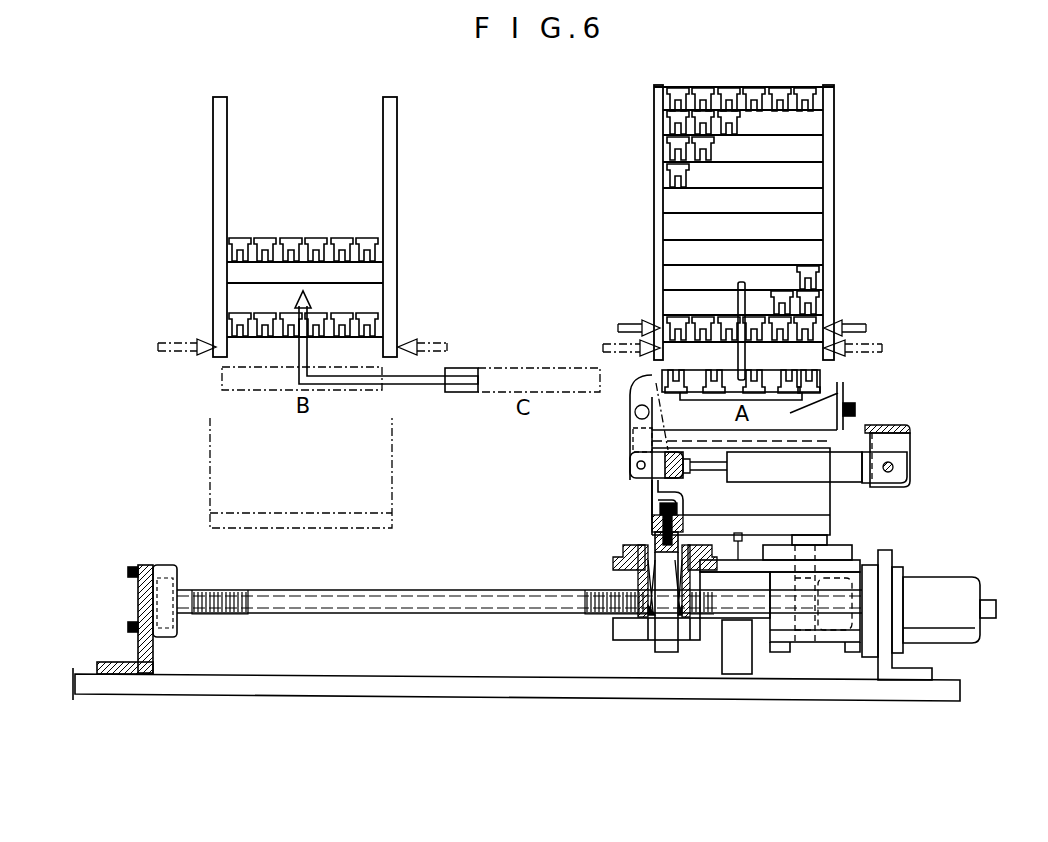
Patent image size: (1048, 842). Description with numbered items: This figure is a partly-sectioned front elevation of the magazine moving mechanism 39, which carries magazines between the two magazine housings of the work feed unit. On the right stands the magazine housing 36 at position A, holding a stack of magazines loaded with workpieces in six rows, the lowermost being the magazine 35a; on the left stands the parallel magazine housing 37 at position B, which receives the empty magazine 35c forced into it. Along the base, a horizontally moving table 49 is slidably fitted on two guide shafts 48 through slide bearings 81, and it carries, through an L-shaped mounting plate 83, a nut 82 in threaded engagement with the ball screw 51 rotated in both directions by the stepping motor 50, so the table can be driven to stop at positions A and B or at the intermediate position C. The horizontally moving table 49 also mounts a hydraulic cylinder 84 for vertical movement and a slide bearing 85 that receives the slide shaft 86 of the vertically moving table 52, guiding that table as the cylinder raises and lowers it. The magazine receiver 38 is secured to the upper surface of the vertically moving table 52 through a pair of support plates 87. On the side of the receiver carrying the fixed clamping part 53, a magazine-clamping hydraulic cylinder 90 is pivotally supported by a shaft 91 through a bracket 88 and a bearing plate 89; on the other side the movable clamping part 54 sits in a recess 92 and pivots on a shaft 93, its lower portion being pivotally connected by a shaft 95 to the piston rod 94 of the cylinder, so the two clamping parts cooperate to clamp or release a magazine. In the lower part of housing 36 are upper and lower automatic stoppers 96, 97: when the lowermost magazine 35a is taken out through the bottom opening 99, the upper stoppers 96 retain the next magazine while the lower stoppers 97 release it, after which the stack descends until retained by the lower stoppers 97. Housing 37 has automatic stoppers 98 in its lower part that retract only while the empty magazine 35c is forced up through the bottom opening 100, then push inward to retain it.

The magazine loaded with workpieces 35a is at (768, 376).
The empty magazine 35c is at (335, 390).
The magazine housing 36 is at (836, 218).
The magazine housing 37 is at (399, 192).
The magazine receiver 38 is at (845, 395).
The magazine moving mechanism 39 is at (966, 455).
The guide shafts 48 is at (542, 590).
The horizontally moving table 49 is at (626, 556).
The stepping motor 50 is at (940, 592).
The ball screw 51 is at (597, 598).
The vertically moving table 52 is at (655, 524).
The fixed clamping part 53 is at (832, 382).
The movable clamping part 54 is at (638, 390).
The slide bearings 81 is at (786, 632).
The nut 82 is at (812, 610).
The L-shaped mounting plate 83 is at (848, 610).
The hydraulic cylinder 84 is at (738, 676).
The slide bearing 85 is at (650, 620).
The slide shaft 86 is at (668, 645).
The support plates 87 is at (660, 499).
The bracket 88 is at (886, 426).
The bearing plate 89 is at (895, 449).
The magazine-clamping hydraulic cylinder 90 is at (850, 475).
The shaft 91 is at (889, 473).
The recess 92 is at (640, 436).
The shaft 93 is at (637, 414).
The piston rod 94 is at (713, 470).
The shaft 95 is at (636, 468).
The upper automatic stoppers 96 is at (855, 322).
The lower automatic stoppers 97 is at (868, 348).
The automatic stoppers 98 is at (431, 340).
The opening 99 is at (670, 350).
The opening 100 is at (240, 351).